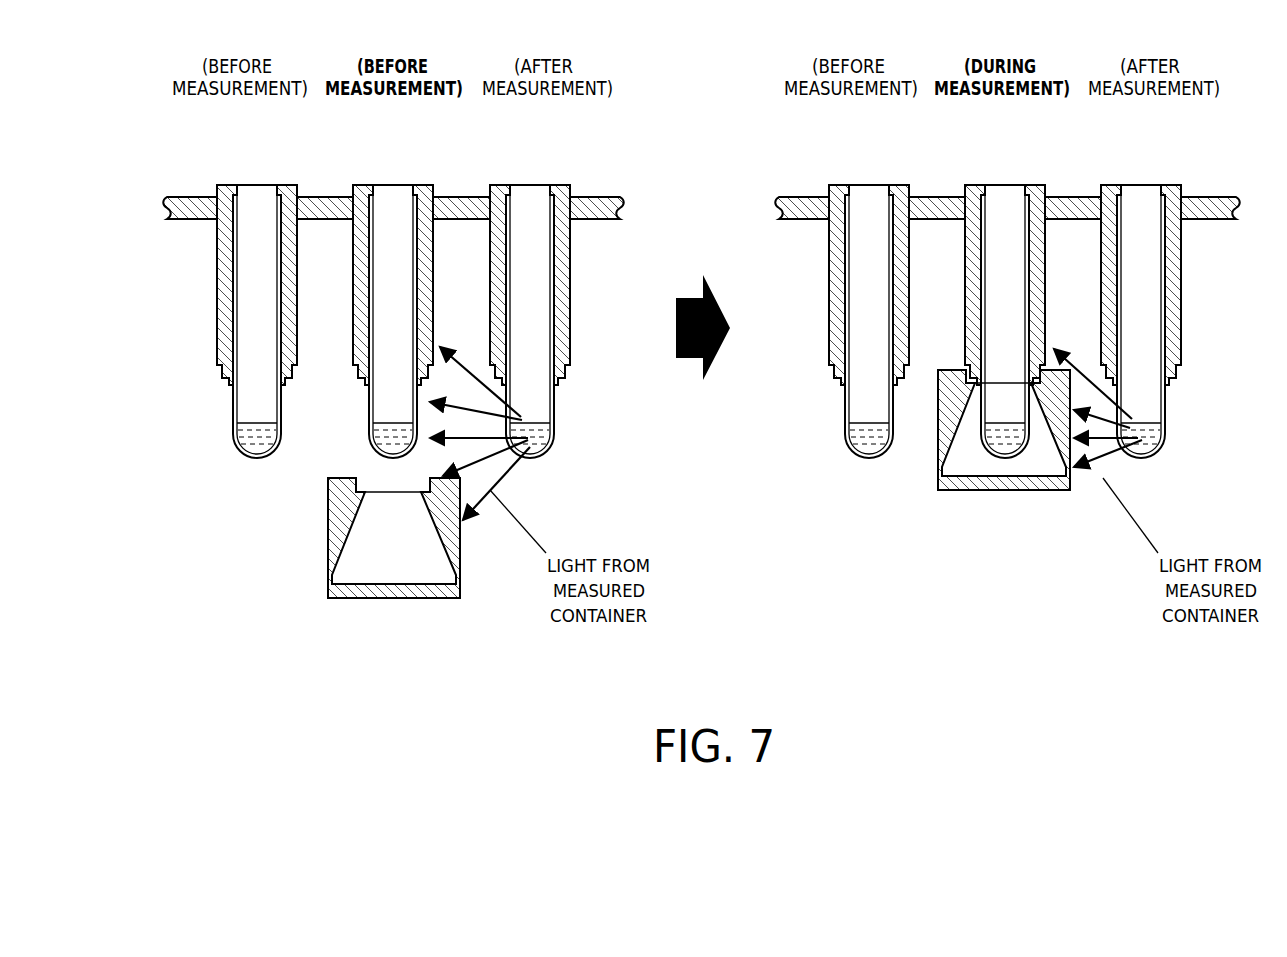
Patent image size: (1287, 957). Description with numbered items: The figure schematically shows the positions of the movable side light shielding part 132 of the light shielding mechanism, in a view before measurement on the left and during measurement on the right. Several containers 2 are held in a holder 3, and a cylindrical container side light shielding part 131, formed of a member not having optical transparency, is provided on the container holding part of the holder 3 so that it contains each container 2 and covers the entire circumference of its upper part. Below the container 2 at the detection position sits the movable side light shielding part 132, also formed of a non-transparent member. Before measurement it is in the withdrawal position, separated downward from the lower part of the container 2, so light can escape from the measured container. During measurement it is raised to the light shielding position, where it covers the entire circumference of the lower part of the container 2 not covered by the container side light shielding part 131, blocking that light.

The container 2 is at (258, 185).
The holder 3 is at (182, 197).
The container side light shielding part 131 is at (217, 250).
The movable side light shielding part 132 is at (327, 586).